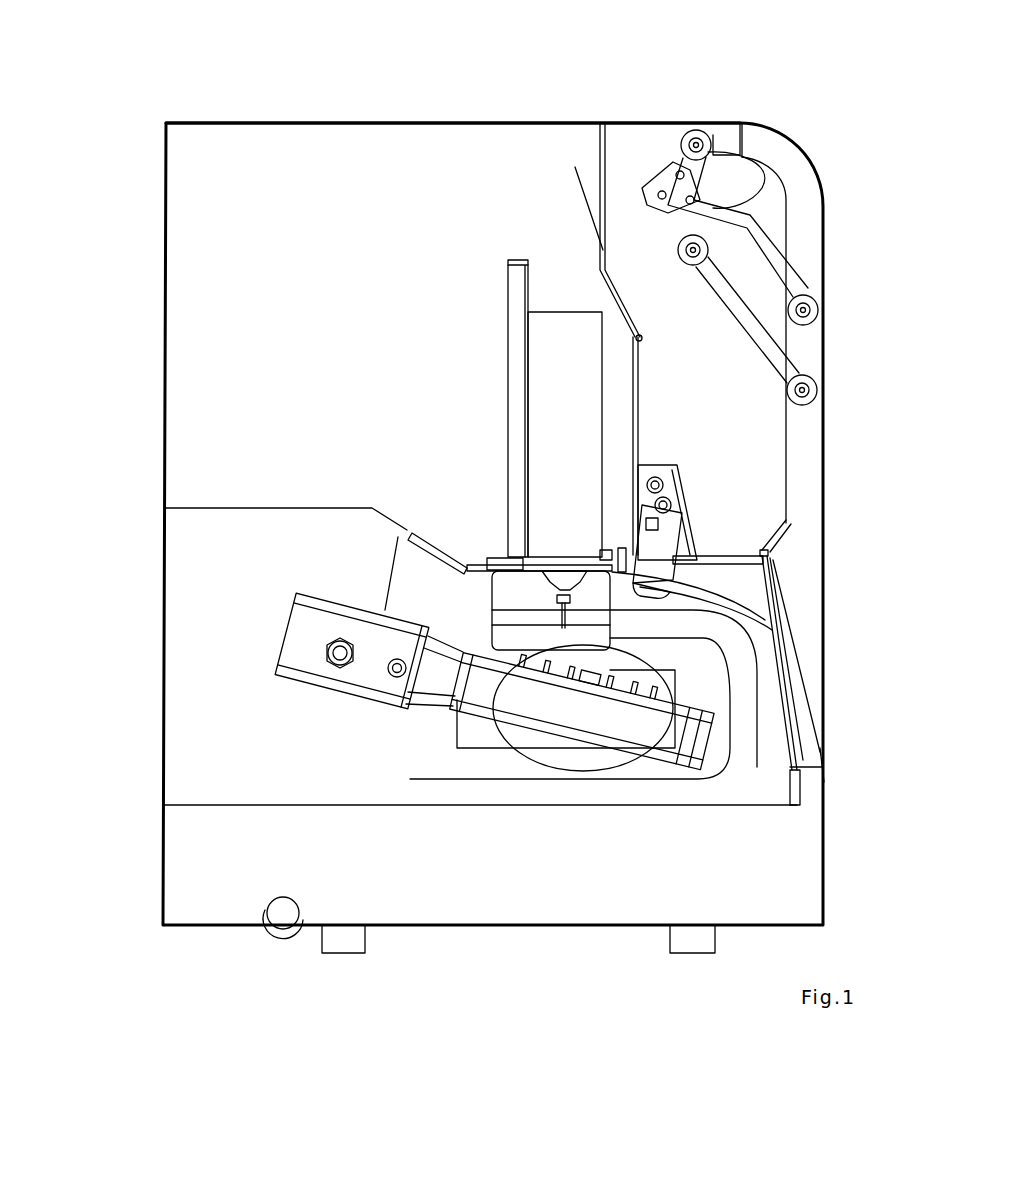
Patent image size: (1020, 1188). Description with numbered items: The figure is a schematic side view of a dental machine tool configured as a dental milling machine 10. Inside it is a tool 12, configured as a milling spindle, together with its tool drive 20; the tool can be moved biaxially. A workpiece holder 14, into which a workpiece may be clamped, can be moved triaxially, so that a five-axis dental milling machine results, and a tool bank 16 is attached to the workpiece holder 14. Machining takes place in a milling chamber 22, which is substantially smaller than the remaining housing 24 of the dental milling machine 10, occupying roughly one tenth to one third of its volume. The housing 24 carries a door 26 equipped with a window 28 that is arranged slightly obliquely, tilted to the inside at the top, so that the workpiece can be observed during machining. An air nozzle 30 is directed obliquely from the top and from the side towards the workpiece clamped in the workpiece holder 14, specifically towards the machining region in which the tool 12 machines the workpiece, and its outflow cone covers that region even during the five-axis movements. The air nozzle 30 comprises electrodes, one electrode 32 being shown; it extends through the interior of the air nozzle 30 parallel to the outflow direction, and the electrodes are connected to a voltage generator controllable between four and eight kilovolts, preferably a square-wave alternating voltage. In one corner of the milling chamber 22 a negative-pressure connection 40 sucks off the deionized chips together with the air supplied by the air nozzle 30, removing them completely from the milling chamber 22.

The dental milling machine 10 is at (465, 88).
The tool 12 is at (500, 608).
The workpiece holder 14 is at (445, 733).
The tool bank 16 is at (672, 662).
The tool drive 20 is at (555, 350).
The milling chamber 22 is at (370, 745).
The housing 24 is at (311, 123).
The door 26 is at (812, 162).
The window 28 is at (785, 628).
The air nozzle 30 is at (663, 538).
The electrode 32 is at (700, 547).
The negative-pressure connection 40 is at (268, 910).